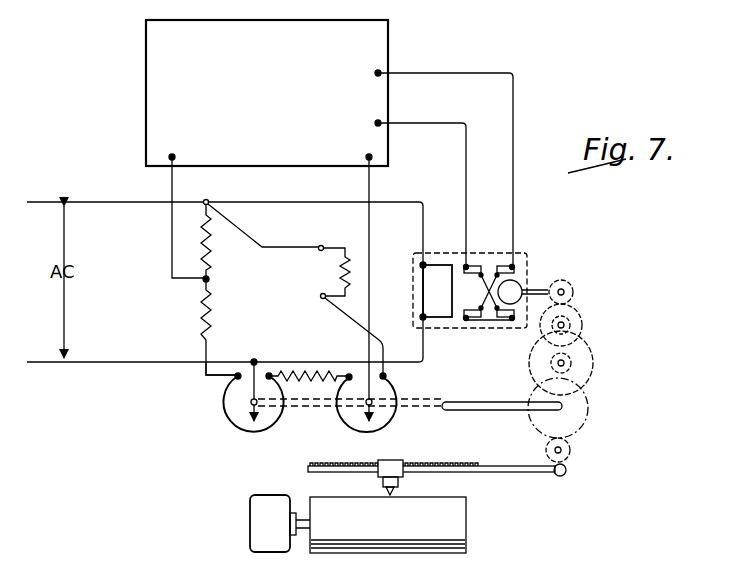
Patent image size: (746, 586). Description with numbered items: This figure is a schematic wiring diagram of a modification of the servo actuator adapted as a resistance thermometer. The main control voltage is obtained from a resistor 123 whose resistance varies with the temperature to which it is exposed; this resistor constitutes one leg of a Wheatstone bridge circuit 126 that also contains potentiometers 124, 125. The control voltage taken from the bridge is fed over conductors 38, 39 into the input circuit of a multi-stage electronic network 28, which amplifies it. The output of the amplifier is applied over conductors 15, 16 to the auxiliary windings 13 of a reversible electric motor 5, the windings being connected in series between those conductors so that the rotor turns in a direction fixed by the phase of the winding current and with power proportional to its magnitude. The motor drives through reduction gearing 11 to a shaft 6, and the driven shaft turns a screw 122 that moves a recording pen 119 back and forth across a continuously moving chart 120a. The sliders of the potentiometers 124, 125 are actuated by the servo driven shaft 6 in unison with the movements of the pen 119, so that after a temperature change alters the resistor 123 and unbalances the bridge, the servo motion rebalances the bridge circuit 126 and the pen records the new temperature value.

The multi-stage electronic network 28 is at (377, 45).
The conductor 16 is at (513, 94).
The conductor 15 is at (466, 166).
The conductor 38 is at (172, 185).
The conductor 39 is at (369, 185).
The resistor 123 is at (352, 267).
The reversible electric motor 5 is at (488, 268).
The auxiliary windings 13 is at (513, 264).
The reduction gearing 11 is at (586, 336).
The shaft 6 is at (494, 402).
The potentiometer 124 is at (233, 423).
The potentiometer 125 is at (350, 426).
The Wheatstone bridge circuit 126 is at (202, 372).
The screw 122 is at (512, 470).
The recording pen 119 is at (403, 489).
The chart 120a is at (466, 520).